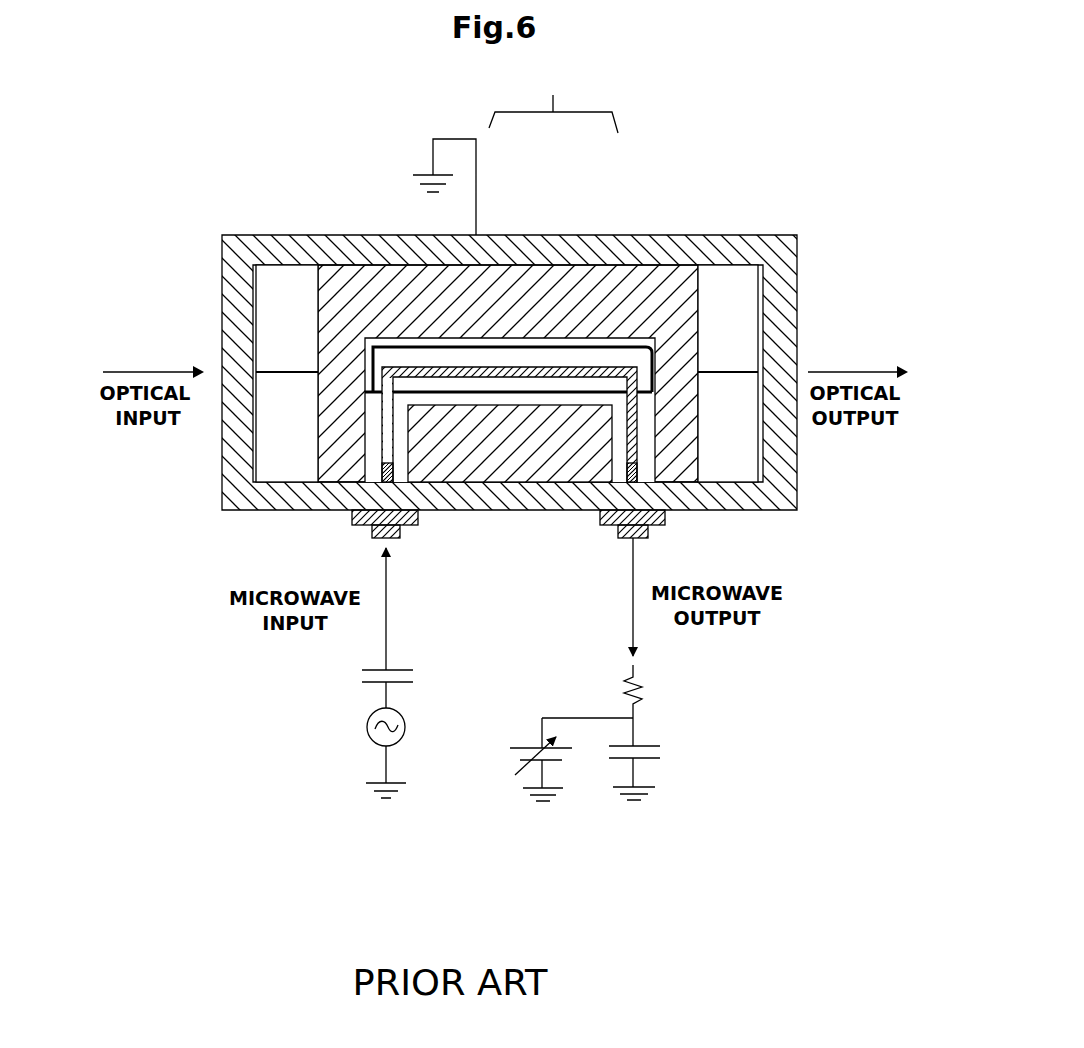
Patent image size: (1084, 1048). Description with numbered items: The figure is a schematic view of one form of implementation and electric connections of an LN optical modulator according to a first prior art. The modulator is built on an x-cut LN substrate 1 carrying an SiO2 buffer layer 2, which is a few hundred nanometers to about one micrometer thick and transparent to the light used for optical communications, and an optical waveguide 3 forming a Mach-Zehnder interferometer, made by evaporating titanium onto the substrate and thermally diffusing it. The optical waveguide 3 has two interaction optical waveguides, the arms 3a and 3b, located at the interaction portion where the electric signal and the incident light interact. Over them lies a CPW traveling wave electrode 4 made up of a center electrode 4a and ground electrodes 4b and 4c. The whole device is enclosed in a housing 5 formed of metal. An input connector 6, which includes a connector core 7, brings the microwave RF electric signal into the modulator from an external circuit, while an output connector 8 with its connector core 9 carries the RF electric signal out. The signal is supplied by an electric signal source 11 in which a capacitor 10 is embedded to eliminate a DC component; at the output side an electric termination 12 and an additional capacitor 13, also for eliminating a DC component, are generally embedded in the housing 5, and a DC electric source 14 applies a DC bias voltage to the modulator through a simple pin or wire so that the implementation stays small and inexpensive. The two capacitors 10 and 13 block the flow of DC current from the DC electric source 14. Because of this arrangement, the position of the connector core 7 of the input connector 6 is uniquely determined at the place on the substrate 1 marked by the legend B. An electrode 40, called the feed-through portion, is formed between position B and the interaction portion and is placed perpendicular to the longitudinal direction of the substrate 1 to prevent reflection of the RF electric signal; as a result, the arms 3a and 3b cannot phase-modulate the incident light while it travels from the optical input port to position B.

The x-cut LN substrate 1 is at (222, 265).
The SiO2 buffer layer 2 is at (285, 285).
The optical waveguide 3 is at (302, 367).
The arm of optical waveguide 3a is at (398, 338).
The arm of optical waveguide 3b is at (371, 345).
The CPW traveling wave electrode 4 is at (509, 273).
The center electrode 4a is at (548, 235).
The ground electrode 4b is at (512, 235).
The ground electrode 4c is at (583, 235).
The housing 5 is at (652, 235).
The input connector 6 is at (405, 532).
The connector core 7 is at (400, 468).
The output connector 8 is at (655, 530).
The connector core 9 is at (640, 468).
The capacitor 10 is at (363, 683).
The electric signal source 11 is at (370, 735).
The electric termination 12 is at (643, 685).
The additional capacitor 13 is at (622, 760).
The DC electric source 14 is at (518, 757).
The electrode 40 is at (372, 470).
The position of connector core B is at (383, 489).